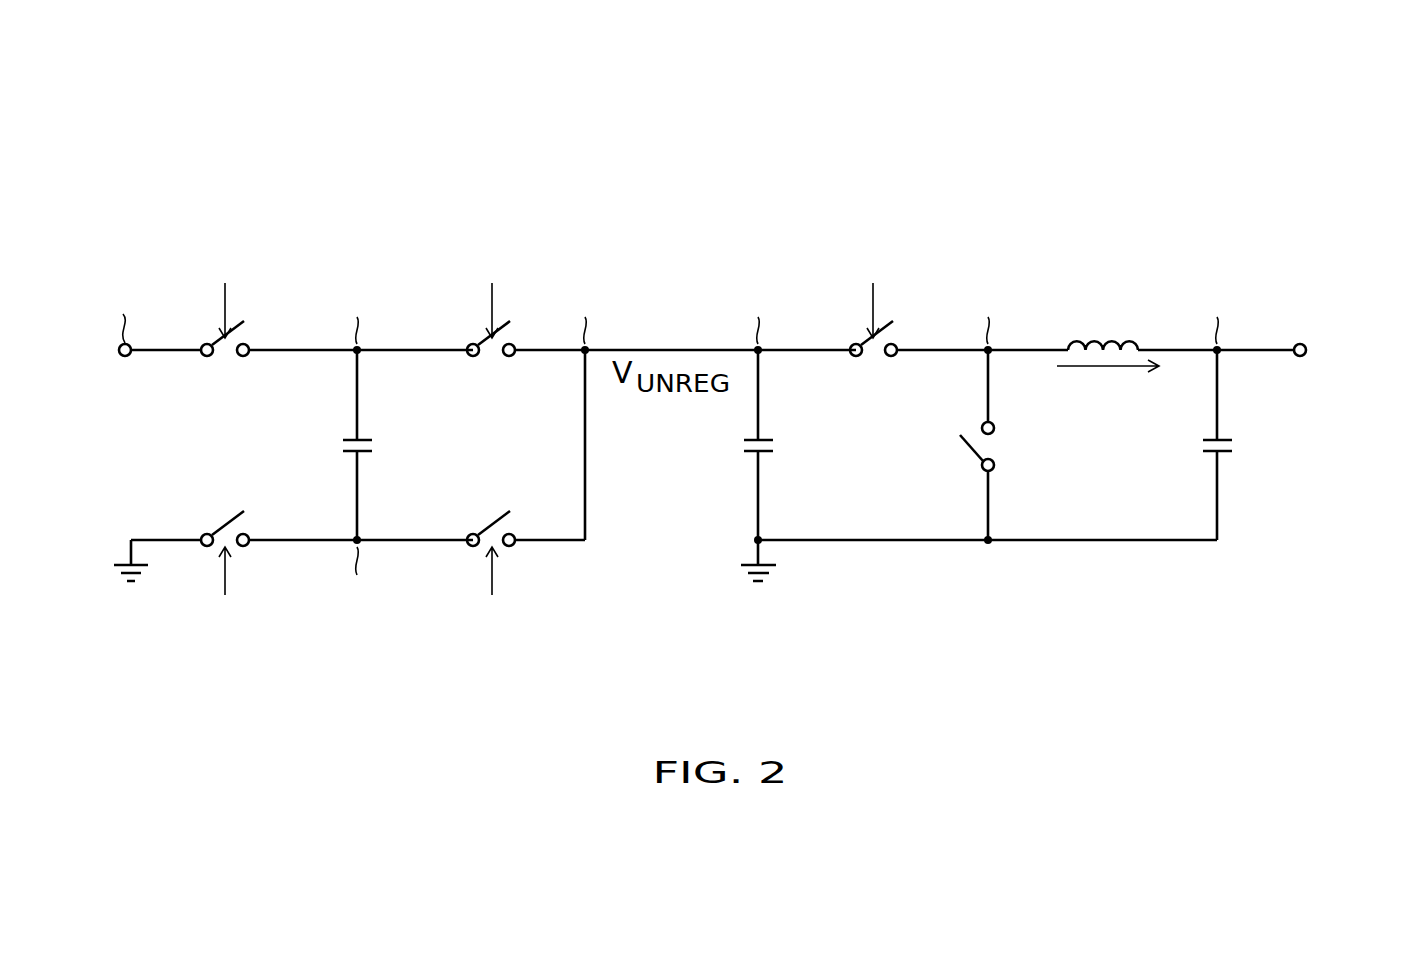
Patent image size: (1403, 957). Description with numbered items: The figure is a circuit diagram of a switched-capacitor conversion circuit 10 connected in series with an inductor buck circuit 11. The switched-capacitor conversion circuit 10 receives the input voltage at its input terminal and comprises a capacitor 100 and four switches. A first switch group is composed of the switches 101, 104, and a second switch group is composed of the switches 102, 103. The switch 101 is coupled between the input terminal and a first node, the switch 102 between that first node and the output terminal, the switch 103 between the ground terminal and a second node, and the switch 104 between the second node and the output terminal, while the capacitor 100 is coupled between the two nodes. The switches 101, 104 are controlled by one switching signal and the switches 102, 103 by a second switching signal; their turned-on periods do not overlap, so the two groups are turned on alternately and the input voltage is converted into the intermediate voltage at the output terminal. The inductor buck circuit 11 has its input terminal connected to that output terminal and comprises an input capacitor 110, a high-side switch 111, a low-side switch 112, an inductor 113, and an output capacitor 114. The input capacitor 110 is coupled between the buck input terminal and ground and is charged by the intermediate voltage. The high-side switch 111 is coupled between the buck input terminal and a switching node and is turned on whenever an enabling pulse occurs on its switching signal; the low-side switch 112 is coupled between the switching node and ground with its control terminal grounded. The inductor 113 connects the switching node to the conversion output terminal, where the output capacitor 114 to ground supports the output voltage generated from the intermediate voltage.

The switched-capacitor conversion circuit 10 is at (383, 232).
The inductor buck circuit 11 is at (1021, 232).
The capacitor 100 is at (371, 437).
The switch 101 is at (225, 357).
The switch 102 is at (492, 357).
The switch 103 is at (224, 521).
The switch 104 is at (490, 521).
The input capacitor 110 is at (772, 437).
The high-side switch 111 is at (873, 357).
The low-side switch 112 is at (996, 448).
The inductor 113 is at (1103, 340).
The output capacitor 114 is at (1231, 437).